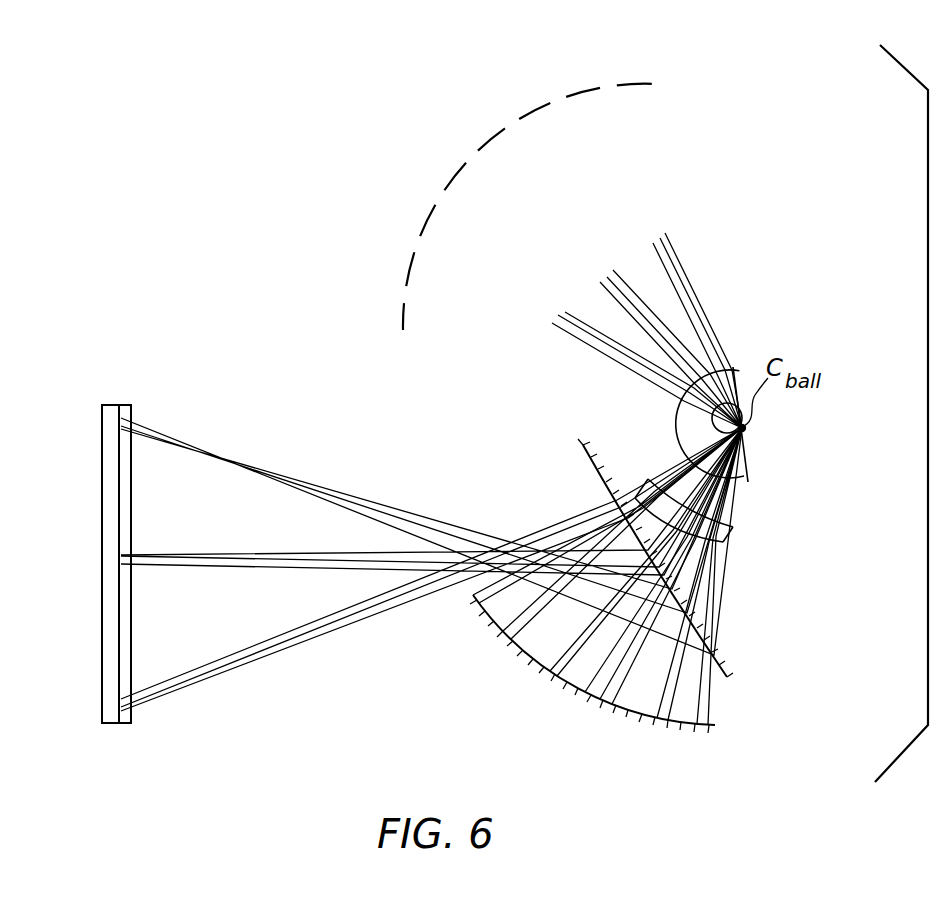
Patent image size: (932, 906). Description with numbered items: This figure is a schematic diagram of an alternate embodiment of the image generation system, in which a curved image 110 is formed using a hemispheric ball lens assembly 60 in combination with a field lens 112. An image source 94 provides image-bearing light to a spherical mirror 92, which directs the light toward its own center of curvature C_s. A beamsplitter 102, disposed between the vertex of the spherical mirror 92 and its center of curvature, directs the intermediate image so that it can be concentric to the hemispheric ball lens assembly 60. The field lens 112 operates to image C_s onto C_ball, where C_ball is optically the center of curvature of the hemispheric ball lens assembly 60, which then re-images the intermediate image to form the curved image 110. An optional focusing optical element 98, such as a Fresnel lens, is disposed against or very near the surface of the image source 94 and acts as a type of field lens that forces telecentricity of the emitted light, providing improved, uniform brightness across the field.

The hemispheric ball lens assembly 60 is at (745, 457).
The spherical mirror 92 is at (568, 682).
The image source 94 is at (103, 470).
The focusing optical element 98 is at (122, 723).
The beamsplitter 102 is at (605, 477).
The curved image 110 is at (478, 157).
The field lens 112 is at (735, 532).